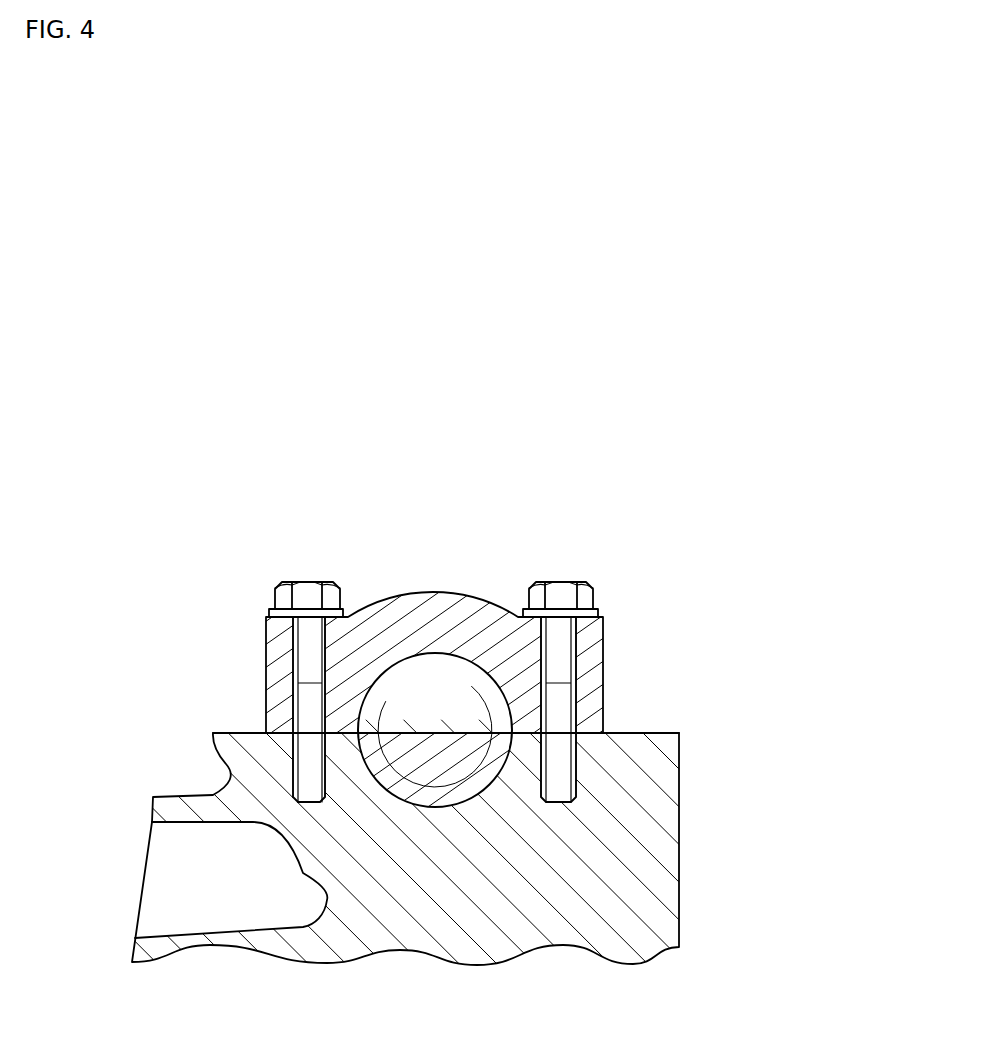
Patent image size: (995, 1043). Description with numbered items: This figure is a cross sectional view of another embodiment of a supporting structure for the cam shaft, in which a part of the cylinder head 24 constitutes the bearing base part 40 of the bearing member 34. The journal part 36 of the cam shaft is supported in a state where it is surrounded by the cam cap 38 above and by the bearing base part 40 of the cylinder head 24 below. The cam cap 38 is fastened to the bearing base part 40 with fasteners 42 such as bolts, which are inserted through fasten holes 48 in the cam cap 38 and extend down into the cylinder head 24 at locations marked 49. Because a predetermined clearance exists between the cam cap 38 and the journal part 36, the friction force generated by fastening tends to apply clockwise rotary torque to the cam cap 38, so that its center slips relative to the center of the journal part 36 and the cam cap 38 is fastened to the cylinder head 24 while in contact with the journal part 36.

The cylinder head 24 is at (461, 818).
The bearing member 34 is at (433, 664).
The journal part 36 is at (403, 683).
The cam cap 38 is at (603, 665).
The bearing base part 40 is at (257, 733).
The fastener 42 is at (308, 582).
The fasten hole 48 is at (295, 624).
The threaded hole in bracket 49 is at (298, 749).